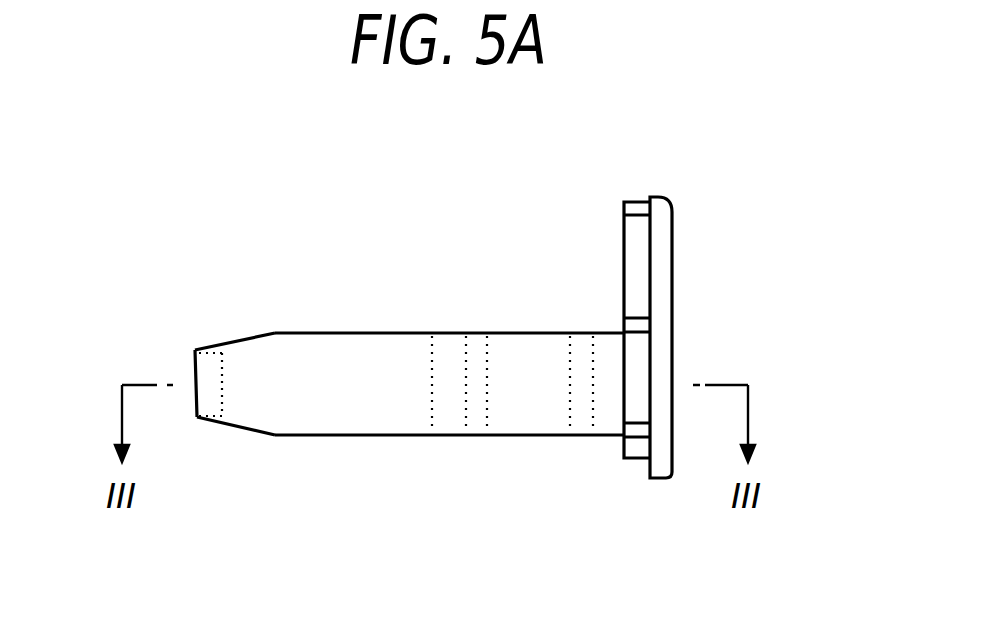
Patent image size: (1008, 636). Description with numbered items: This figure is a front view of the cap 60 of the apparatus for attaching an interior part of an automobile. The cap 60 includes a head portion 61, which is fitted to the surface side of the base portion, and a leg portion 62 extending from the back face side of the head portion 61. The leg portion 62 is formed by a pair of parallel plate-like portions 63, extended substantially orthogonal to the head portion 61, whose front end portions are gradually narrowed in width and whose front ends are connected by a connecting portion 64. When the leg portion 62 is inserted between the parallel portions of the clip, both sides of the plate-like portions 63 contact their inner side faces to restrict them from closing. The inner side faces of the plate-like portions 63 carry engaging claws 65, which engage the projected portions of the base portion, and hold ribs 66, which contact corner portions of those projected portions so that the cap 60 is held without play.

The cap 60 is at (493, 387).
The head portion 61 is at (672, 270).
The leg portion 62 is at (356, 540).
The plate-like portions 63 is at (346, 437).
The connecting portion 64 is at (190, 398).
The engaging claws 65 is at (473, 400).
The hold ribs 66 is at (581, 360).